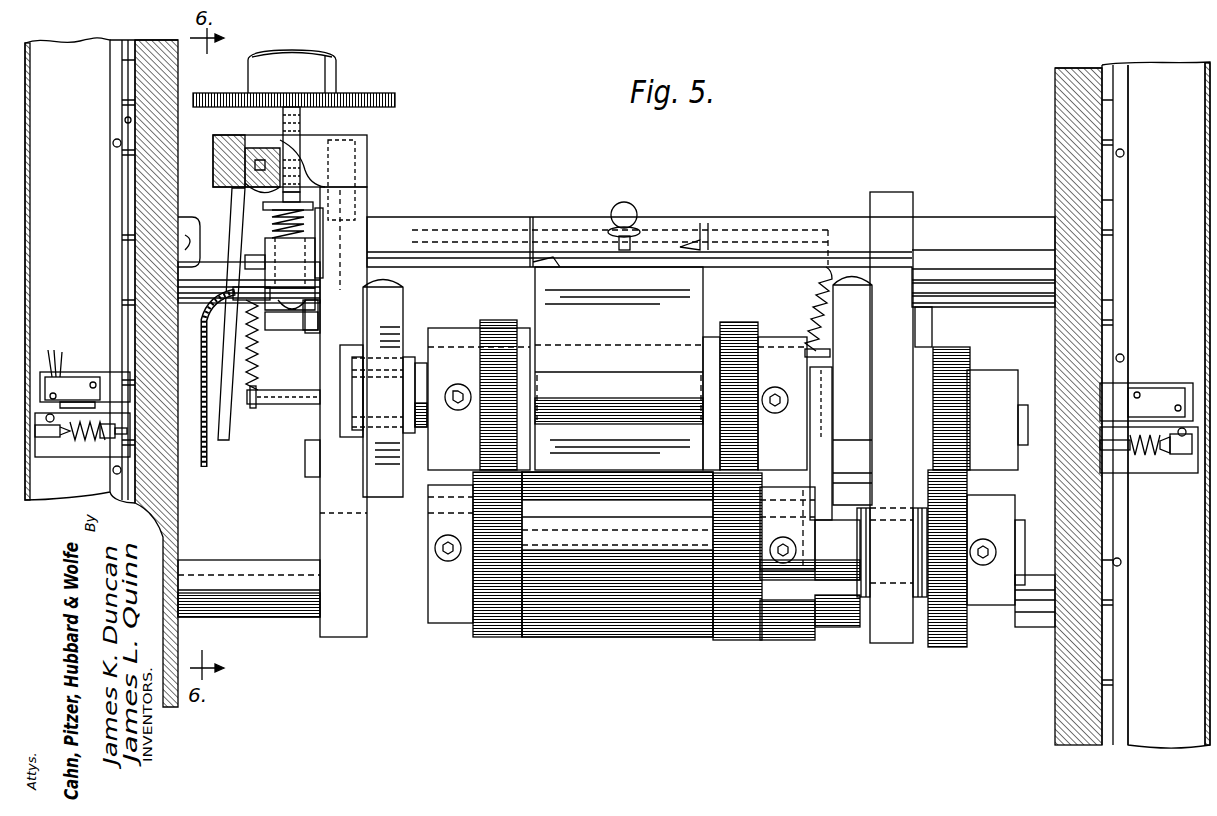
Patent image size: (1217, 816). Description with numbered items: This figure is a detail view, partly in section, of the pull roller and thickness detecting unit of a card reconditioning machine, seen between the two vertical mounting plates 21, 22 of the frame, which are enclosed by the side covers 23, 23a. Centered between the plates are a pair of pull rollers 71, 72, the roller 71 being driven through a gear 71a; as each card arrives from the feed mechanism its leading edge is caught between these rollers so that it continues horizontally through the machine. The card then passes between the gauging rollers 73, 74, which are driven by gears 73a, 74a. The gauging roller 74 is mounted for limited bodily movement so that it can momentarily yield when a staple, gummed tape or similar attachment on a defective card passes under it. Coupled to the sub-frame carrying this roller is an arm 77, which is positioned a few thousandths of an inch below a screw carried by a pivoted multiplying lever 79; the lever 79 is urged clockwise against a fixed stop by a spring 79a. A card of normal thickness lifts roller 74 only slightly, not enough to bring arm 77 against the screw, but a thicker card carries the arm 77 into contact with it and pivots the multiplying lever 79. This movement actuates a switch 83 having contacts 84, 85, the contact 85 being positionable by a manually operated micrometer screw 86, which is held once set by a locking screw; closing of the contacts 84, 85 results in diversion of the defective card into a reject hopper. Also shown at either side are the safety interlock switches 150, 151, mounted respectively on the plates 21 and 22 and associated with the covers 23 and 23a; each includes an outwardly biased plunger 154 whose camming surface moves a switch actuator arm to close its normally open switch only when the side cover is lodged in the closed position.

The vertical mounting plate 21 is at (1060, 101).
The vertical mounting plate 22 is at (163, 58).
The side cover 23 is at (1205, 236).
The side cover 23a is at (30, 219).
The pull roller 71 is at (500, 612).
The gear 71a is at (935, 612).
The pull roller 72 is at (493, 330).
The gauging roller 73 is at (588, 632).
The gear 73a is at (962, 647).
The gauging roller 74 is at (535, 350).
The gear 74a is at (965, 355).
The arm 77 is at (283, 322).
The multiplying lever 79 is at (292, 255).
The spring 79a is at (260, 366).
The switch 83 is at (226, 165).
The contact 84 is at (313, 198).
The contact 85 is at (296, 172).
The micrometer screw 86 is at (206, 106).
The interlock switch 150 is at (1148, 398).
The interlock switch 151 is at (70, 388).
The plunger 154 is at (45, 450).